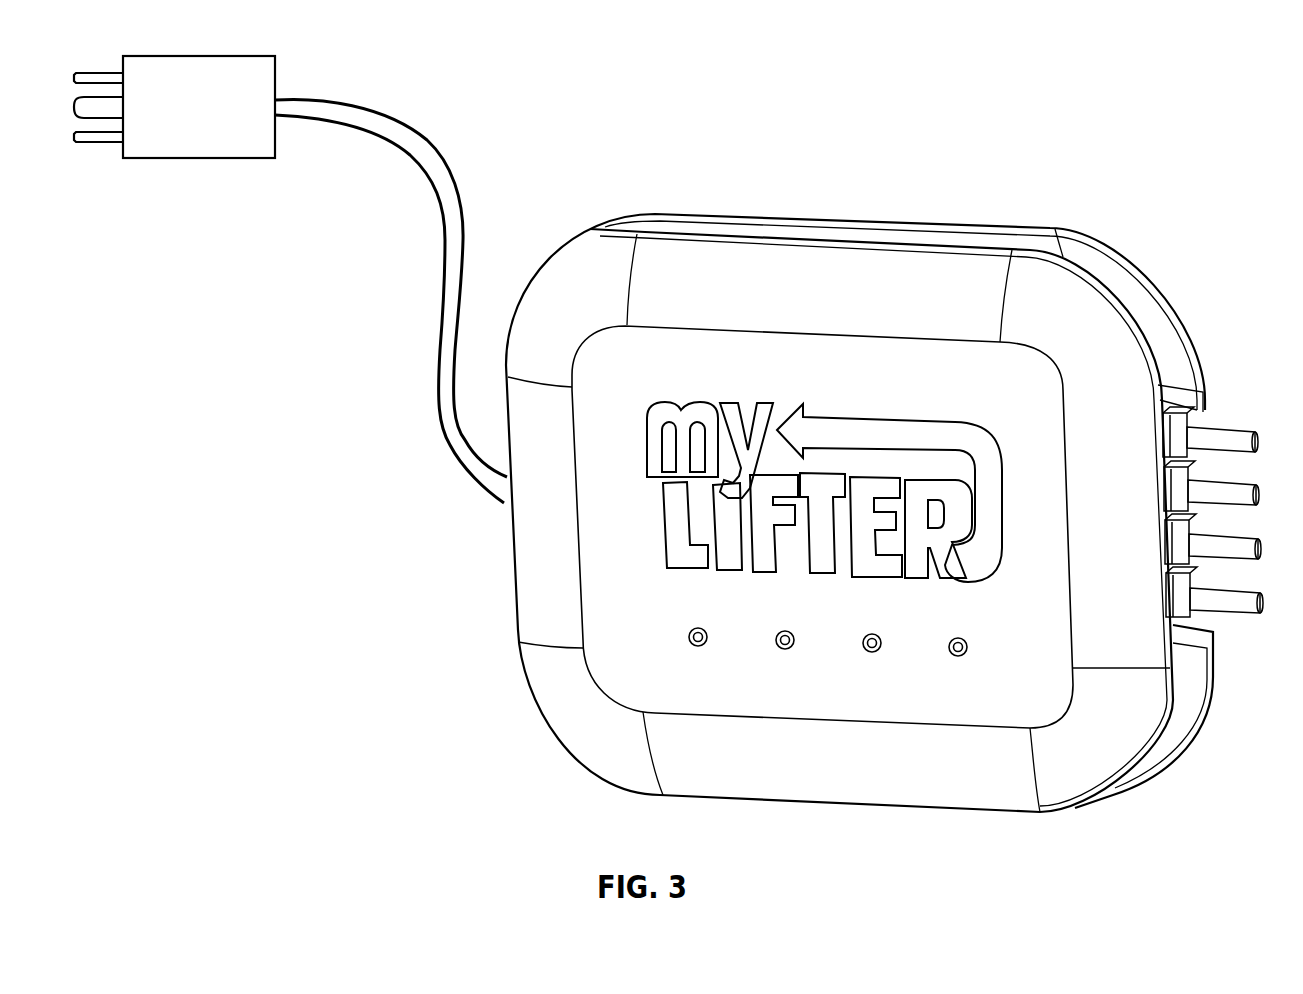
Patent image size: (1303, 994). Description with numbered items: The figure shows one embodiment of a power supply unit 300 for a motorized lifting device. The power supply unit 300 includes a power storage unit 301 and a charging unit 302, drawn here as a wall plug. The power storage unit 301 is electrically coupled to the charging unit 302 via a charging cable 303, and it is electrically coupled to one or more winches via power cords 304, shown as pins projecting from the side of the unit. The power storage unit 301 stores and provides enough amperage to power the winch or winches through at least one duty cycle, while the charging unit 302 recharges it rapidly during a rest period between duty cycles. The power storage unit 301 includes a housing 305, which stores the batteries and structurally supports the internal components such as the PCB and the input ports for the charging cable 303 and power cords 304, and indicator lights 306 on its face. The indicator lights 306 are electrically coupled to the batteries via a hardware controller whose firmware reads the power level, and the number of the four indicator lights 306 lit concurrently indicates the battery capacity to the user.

The power supply unit 300 is at (307, 632).
The power storage unit 301 is at (835, 218).
The charging unit 302 is at (207, 158).
The charging cable 303 is at (458, 176).
The power cords 304 is at (1240, 397).
The housing 305 is at (838, 378).
The indicator lights 306 is at (763, 660).